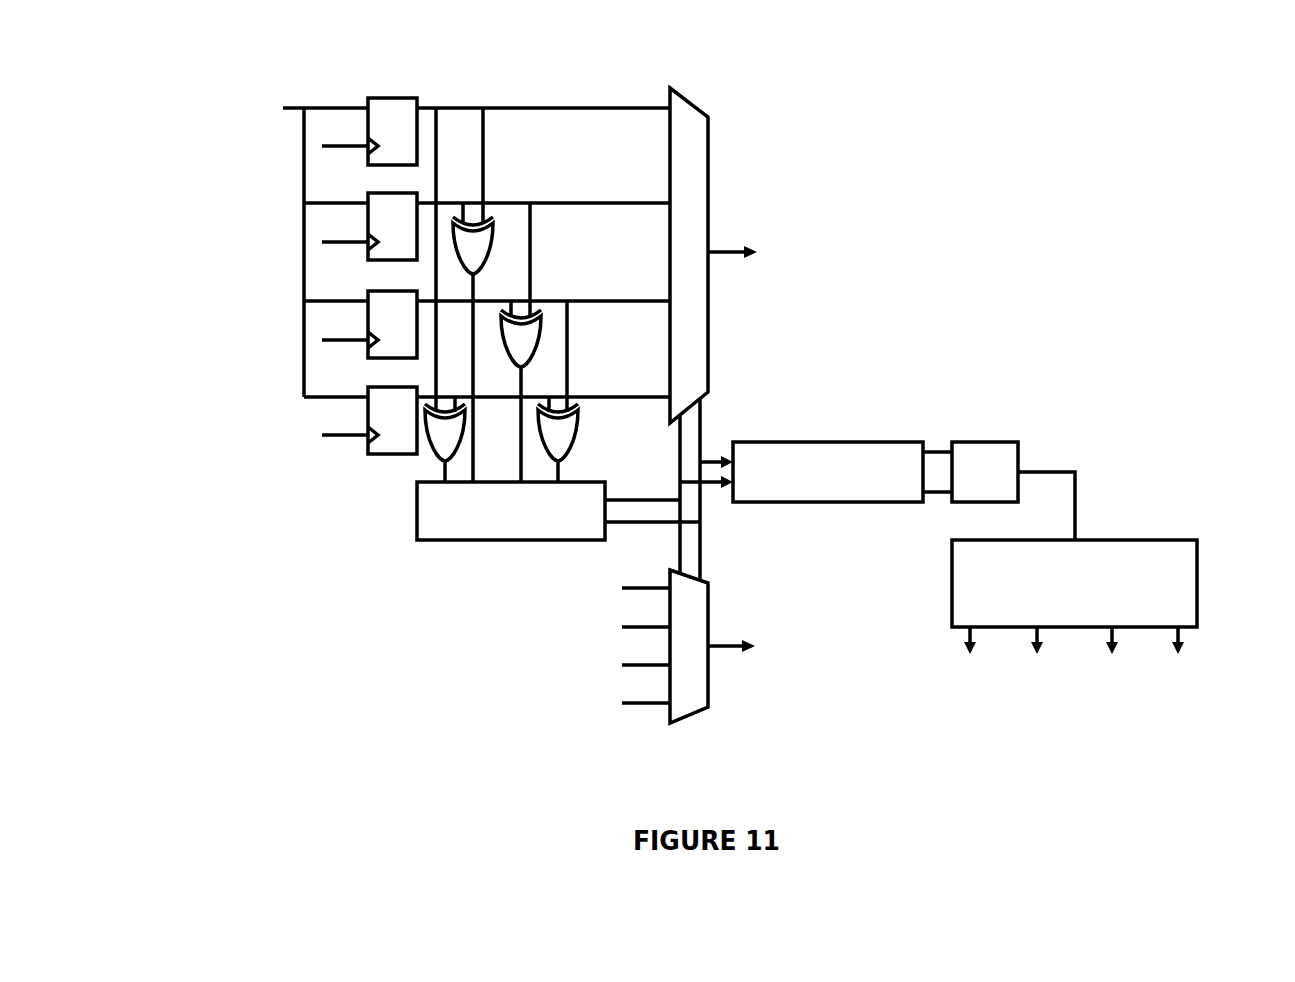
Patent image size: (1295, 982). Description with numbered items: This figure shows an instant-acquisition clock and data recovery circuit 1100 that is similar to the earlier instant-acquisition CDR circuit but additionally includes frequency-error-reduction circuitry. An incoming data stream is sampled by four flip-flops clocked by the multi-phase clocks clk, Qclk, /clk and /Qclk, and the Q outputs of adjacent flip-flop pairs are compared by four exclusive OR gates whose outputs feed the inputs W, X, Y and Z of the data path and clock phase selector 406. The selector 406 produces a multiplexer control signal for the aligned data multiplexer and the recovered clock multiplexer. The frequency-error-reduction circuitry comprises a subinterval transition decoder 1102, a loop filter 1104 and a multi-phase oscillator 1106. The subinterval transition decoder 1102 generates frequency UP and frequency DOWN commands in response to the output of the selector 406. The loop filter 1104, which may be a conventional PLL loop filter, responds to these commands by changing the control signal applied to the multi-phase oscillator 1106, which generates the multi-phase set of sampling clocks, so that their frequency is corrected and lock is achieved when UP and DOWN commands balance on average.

The data path and clock phase selector 406 is at (406, 538).
The instant-acquisition CDR circuit 1100 is at (316, 672).
The subinterval transition decoder 1102 is at (783, 433).
The loop filter 1104 is at (1008, 433).
The multi-phase oscillator 1106 is at (1185, 531).